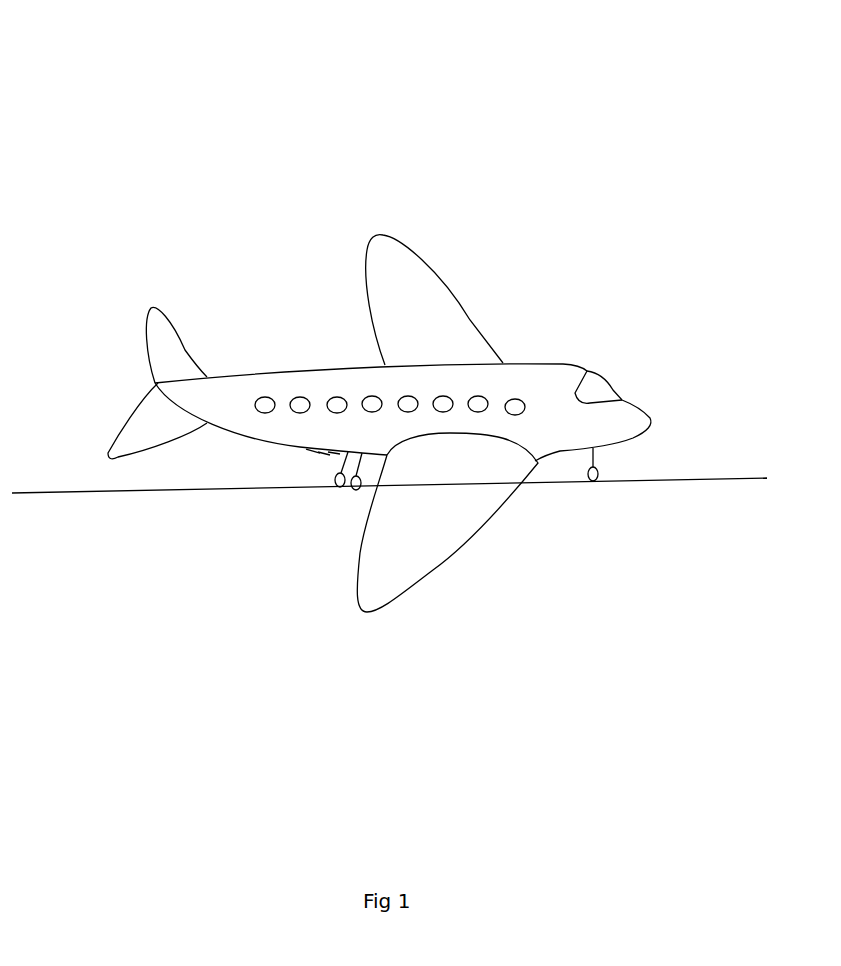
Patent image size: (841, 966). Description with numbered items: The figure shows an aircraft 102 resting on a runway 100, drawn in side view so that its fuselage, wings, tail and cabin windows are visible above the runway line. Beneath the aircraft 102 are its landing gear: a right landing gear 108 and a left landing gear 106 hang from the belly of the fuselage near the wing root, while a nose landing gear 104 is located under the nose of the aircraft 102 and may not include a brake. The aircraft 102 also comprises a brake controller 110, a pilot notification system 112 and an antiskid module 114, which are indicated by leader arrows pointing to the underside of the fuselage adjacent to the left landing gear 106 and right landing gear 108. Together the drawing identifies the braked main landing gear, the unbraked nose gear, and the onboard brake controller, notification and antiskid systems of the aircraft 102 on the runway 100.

The runway 100 is at (123, 60).
The aircraft 102 is at (308, 359).
The nose landing gear 104 is at (587, 480).
The left landing gear 106 is at (333, 485).
The right landing gear 108 is at (357, 492).
The brake controller 110 is at (313, 450).
The pilot notification system 112 is at (325, 460).
The antiskid module 114 is at (334, 458).